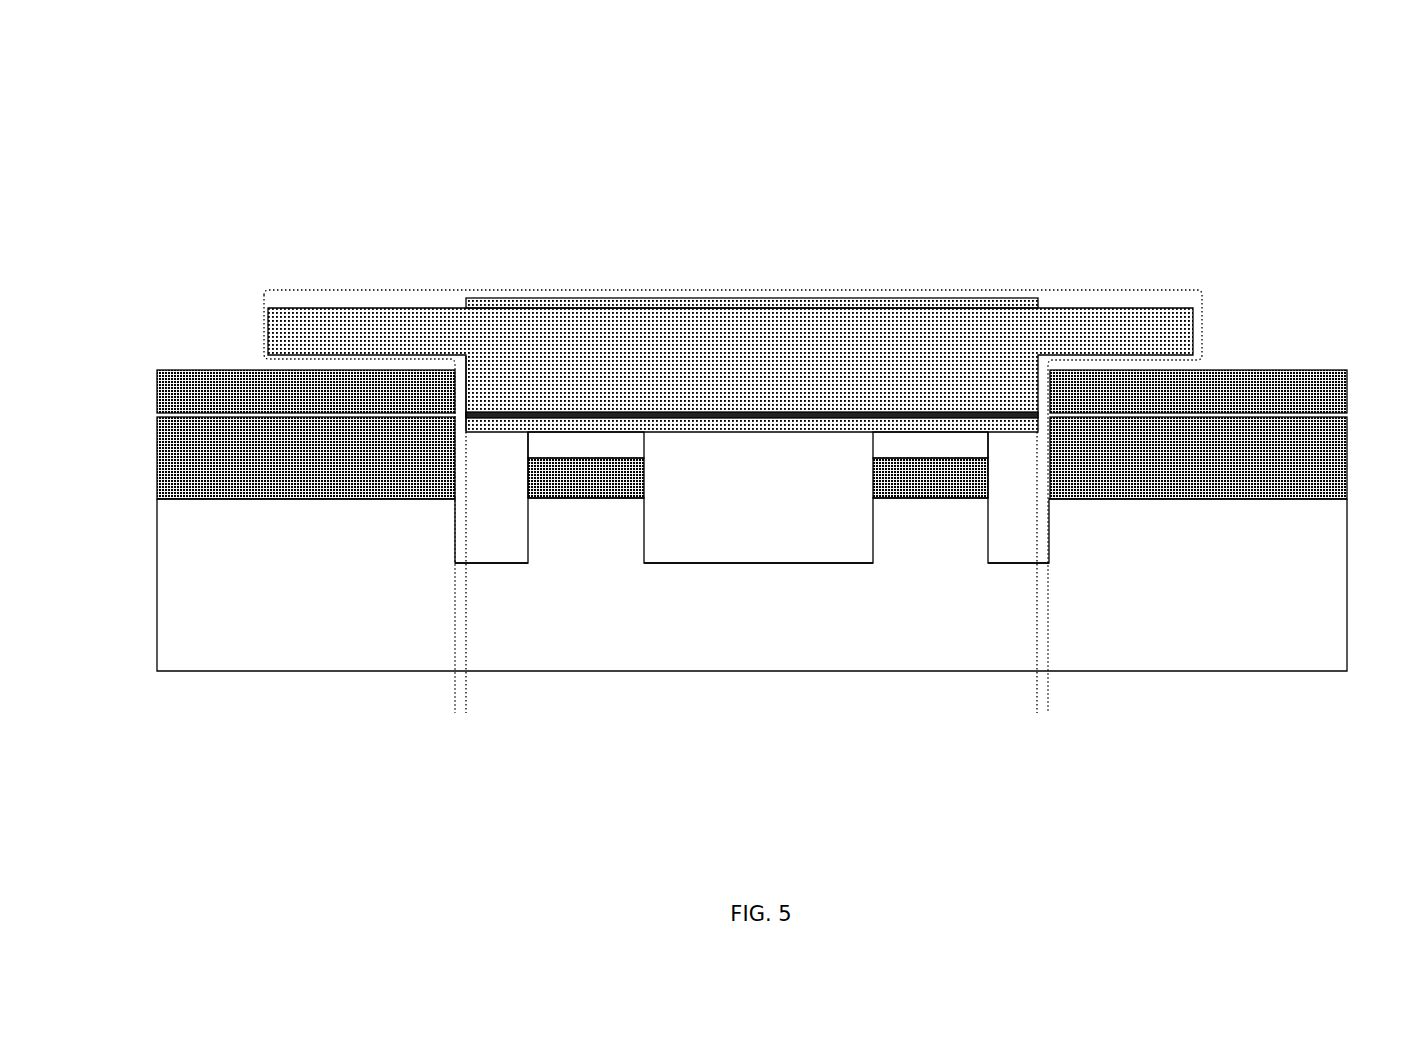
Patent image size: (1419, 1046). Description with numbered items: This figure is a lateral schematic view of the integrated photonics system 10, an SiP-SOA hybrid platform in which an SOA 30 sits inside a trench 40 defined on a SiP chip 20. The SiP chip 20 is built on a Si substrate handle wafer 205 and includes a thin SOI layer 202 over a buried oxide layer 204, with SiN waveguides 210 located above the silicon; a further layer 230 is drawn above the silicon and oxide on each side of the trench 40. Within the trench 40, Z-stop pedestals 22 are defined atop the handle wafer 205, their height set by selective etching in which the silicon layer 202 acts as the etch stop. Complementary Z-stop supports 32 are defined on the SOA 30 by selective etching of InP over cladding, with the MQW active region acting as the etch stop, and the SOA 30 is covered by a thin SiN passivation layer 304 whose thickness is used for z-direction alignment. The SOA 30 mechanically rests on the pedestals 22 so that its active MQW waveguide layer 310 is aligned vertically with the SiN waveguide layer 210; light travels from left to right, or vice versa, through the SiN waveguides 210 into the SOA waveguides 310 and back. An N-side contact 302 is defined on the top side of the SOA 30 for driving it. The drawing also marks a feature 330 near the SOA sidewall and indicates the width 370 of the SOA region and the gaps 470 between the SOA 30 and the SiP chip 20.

The integrated photonics system 10 is at (212, 133).
The SiP chip 20 is at (168, 573).
The Z-stop pedestals 22 is at (528, 480).
The SOA 30 is at (292, 291).
The Z-stop supports 32 is at (594, 394).
The trench 40 is at (490, 533).
The SOI layer 202 is at (644, 441).
The buried oxide layer 204 is at (644, 484).
The Si substrate handle wafer 205 is at (742, 647).
The SiN waveguides 210 is at (203, 410).
The dielectric layer 230 is at (454, 434).
The N-side contact 302 is at (760, 306).
The SiN passivation layer 304 is at (688, 410).
The MQW waveguides 310 is at (836, 412).
The die sidewall 330 is at (467, 398).
The die width 370 is at (466, 700).
The gap width 470 is at (466, 706).